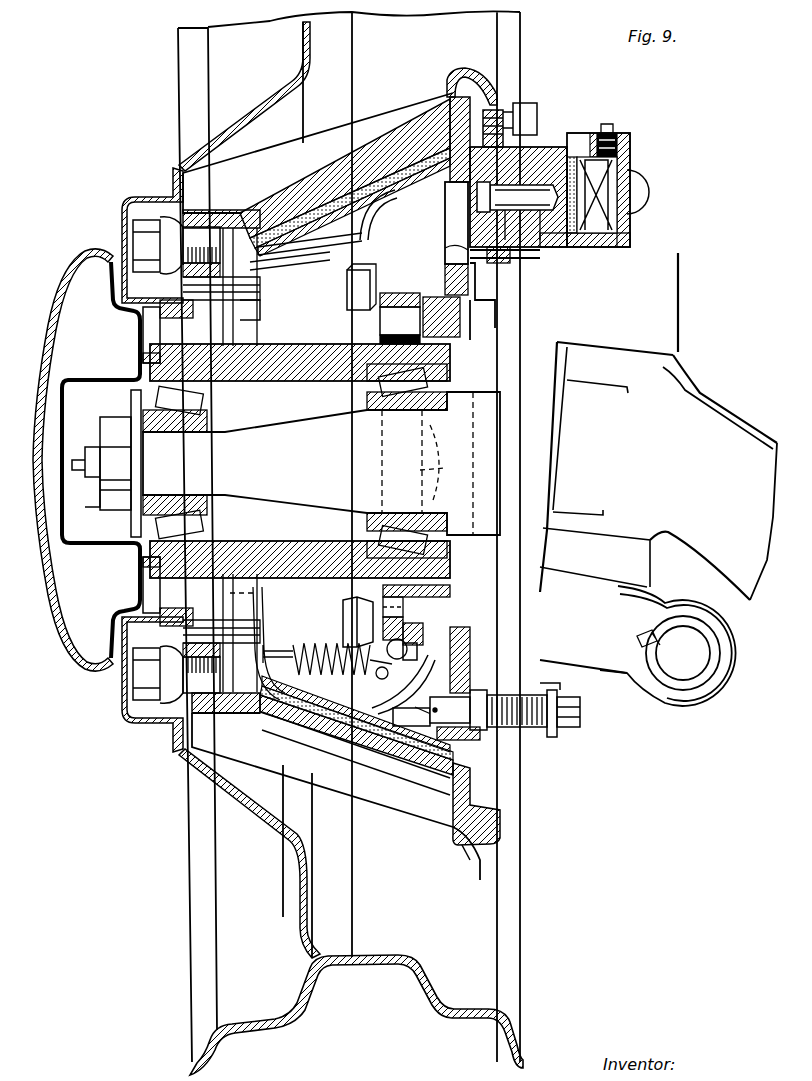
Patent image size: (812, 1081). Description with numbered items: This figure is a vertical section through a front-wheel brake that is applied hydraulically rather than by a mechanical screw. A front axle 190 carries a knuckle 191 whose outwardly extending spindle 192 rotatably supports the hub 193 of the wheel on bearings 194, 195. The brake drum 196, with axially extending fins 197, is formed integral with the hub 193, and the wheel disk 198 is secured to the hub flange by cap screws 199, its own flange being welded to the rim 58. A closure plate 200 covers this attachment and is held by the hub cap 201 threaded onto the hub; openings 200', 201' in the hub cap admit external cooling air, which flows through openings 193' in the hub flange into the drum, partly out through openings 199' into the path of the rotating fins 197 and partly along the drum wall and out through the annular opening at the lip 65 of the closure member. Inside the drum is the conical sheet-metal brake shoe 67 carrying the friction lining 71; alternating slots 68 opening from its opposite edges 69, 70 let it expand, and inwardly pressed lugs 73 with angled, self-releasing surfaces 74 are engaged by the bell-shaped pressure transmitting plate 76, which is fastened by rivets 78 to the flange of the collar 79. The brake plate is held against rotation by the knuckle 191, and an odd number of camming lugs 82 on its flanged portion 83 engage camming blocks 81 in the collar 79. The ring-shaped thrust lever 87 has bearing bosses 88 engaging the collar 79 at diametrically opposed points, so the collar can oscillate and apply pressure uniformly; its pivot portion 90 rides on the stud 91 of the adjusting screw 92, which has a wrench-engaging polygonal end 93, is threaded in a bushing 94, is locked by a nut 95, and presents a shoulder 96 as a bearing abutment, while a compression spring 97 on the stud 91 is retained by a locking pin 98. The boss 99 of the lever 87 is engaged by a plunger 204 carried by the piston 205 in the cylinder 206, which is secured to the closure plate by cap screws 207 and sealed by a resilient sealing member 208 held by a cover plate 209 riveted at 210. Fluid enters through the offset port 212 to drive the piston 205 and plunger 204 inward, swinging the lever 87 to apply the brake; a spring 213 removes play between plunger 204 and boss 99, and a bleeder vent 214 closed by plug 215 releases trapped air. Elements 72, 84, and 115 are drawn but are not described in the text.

The rim 58 is at (293, 997).
The lip 65 is at (468, 860).
The conical brake shoe member 67 is at (338, 200).
The slots 68 is at (290, 266).
The edge of shoe member 69 is at (278, 262).
The edge of shoe member 70 is at (500, 790).
The friction lining 71 is at (314, 216).
The brake shoe web 72 is at (288, 205).
The lugs 73 is at (360, 668).
The angular surfaces 74 is at (346, 324).
The pressure transmitting plate 76 is at (390, 222).
The rivets 78 is at (418, 650).
The collar member 79 is at (360, 630).
The camming blocks 81 is at (378, 330).
The camming lugs 82 is at (500, 300).
The flanged portion 83 is at (500, 322).
The anchor 84 is at (400, 318).
The thrust lever 87 is at (450, 296).
The bearing bosses 88 is at (415, 464).
The pivot portion 90 is at (510, 760).
The stud portion 91 is at (455, 683).
The adjusting screw 92 is at (556, 728).
The polygonal end portion 93 is at (580, 714).
The bushing 94 is at (490, 735).
The locking nut 95 is at (556, 688).
The shoulder 96 is at (540, 660).
The compression spring 97 is at (392, 760).
The locking pin 98 is at (430, 712).
The boss portion 99 is at (450, 200).
The nut 115 is at (518, 103).
The front axle 190 is at (670, 390).
The knuckle 191 is at (680, 318).
The spindle 192 is at (300, 430).
The hub 193 is at (300, 463).
The openings 193' is at (340, 464).
The bearing 194 is at (372, 543).
The bearing 195 is at (232, 500).
The brake drum 196 is at (382, 770).
The fins 197 is at (246, 172).
The wheel disk 198 is at (188, 160).
The cap screws 199 is at (178, 454).
The openings 199' is at (268, 311).
The closure plate 200 is at (130, 460).
The opening 200' is at (102, 460).
The hub cap 201 is at (67, 460).
The opening 201' is at (111, 460).
The plunger 204 is at (535, 140).
The piston member 205 is at (605, 130).
The pressure cylinder 206 is at (538, 150).
The cap screws 207 is at (510, 112).
The resilient sealing member 208 is at (452, 138).
The cover plate member 209 is at (458, 100).
The rivets 210 is at (527, 268).
The offset port 212 is at (640, 190).
The spring member 213 is at (636, 166).
The bleeder vent 214 is at (640, 136).
The bleeder plug 215 is at (618, 128).